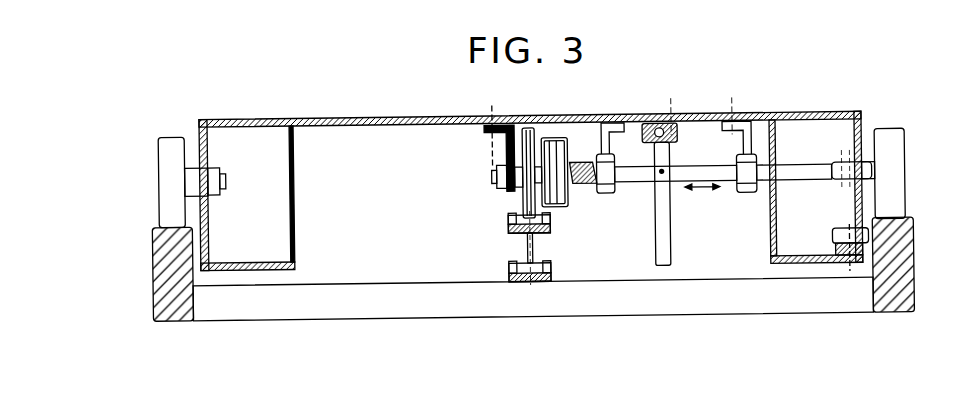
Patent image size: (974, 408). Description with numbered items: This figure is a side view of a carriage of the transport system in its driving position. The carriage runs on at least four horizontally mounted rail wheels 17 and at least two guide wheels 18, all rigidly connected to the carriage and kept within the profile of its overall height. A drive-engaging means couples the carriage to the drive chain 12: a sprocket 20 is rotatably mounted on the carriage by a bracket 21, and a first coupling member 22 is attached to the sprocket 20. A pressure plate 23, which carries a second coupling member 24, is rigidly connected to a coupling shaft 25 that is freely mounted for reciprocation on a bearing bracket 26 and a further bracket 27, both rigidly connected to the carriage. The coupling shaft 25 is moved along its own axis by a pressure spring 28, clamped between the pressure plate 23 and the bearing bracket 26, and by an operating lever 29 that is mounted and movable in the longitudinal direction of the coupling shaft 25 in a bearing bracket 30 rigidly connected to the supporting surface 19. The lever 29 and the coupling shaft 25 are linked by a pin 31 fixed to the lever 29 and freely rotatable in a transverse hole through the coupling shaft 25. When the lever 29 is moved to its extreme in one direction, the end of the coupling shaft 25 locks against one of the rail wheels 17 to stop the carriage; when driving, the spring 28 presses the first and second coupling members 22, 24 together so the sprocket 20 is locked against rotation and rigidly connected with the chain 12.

The drive chain 12 is at (557, 207).
The rail wheels 17 is at (165, 170).
The guide wheels 18 is at (838, 254).
The supporting surface 19 is at (330, 119).
The sprocket 20 is at (514, 127).
The bracket 21 is at (497, 150).
The first coupling member 22 is at (547, 138).
The pressure plate 23 is at (567, 140).
The second coupling member 24 is at (562, 207).
The coupling shaft 25 is at (633, 178).
The bearing bracket 26 is at (623, 123).
The bracket 27 is at (763, 138).
The pressure spring 28 is at (573, 187).
The lever 29 is at (663, 229).
The bearing bracket 30 is at (691, 139).
The pin 31 is at (675, 167).